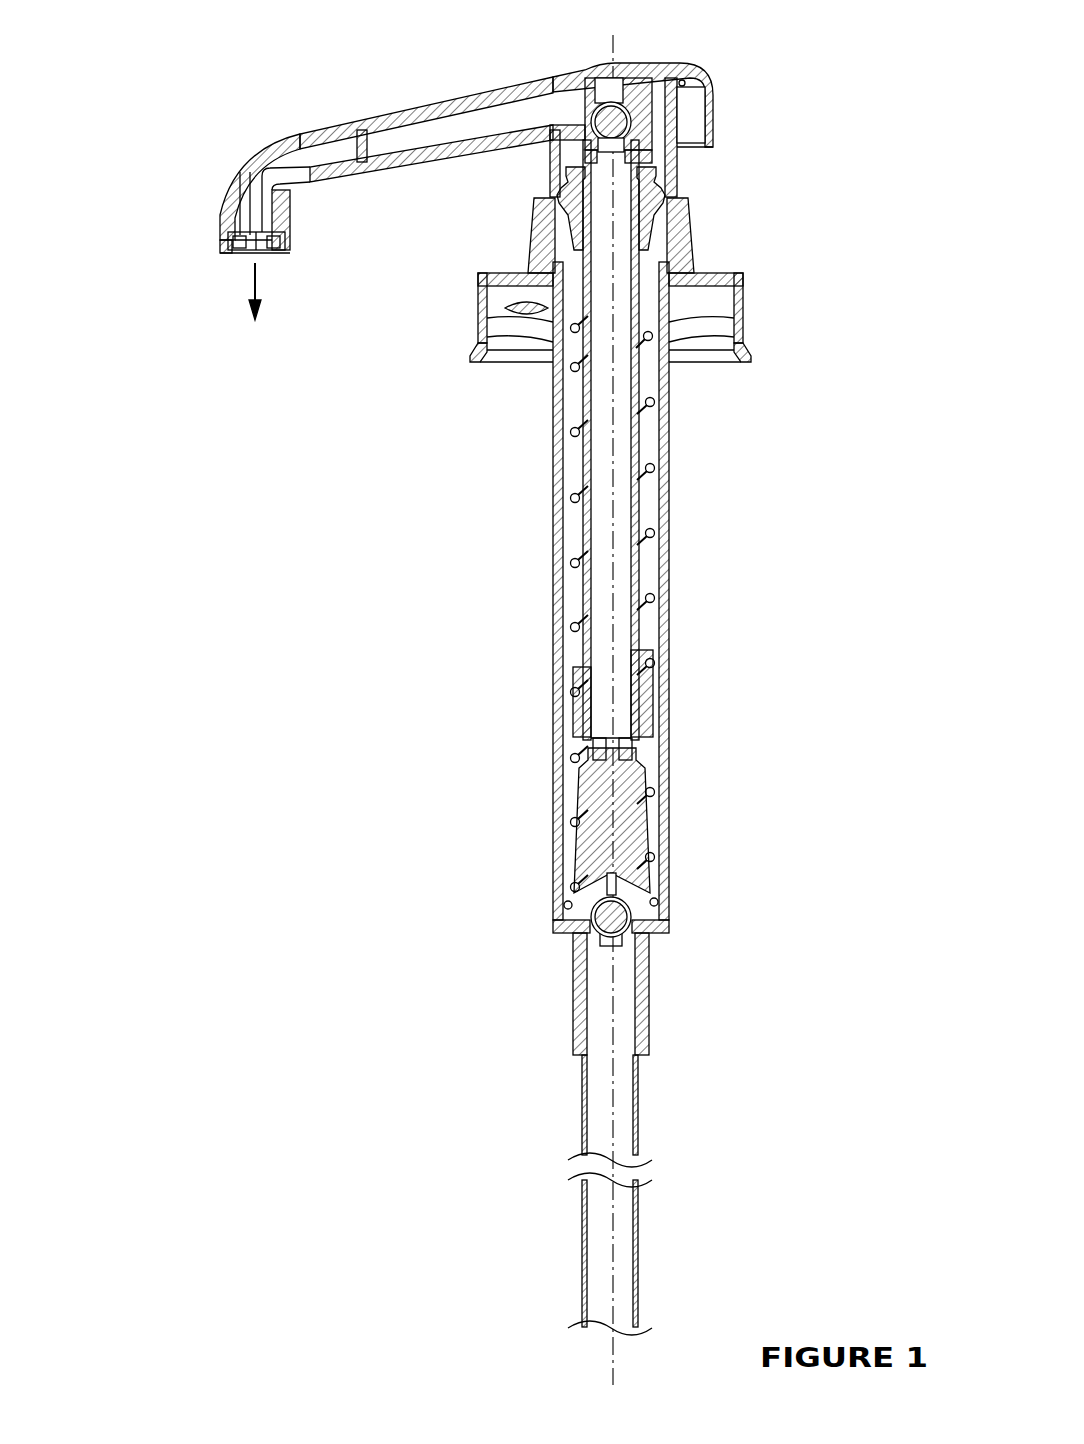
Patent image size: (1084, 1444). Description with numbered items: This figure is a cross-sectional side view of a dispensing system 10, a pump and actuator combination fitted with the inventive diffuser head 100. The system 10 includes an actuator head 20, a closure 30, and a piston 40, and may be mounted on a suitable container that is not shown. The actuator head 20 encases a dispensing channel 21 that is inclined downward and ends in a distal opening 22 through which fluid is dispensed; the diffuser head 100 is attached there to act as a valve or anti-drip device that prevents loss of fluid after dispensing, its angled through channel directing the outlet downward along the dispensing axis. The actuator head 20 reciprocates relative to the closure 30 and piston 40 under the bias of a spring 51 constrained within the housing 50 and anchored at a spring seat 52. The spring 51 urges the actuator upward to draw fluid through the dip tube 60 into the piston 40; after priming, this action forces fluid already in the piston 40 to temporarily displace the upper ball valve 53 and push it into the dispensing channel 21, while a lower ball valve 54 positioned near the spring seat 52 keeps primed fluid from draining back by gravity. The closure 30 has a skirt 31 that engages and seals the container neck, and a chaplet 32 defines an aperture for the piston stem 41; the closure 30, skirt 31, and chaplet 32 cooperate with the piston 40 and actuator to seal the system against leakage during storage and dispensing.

The dispensing system 10 is at (158, 72).
The actuator head 20 is at (610, 76).
The dispensing channel 21 is at (415, 135).
The distal opening 22 is at (290, 133).
The diffuser head 100 is at (295, 250).
The closure 30 is at (478, 325).
The skirt 31 is at (745, 326).
The chaplet 32 is at (540, 228).
The piston 40 is at (652, 338).
The piston stem 41 is at (668, 245).
The housing 50 is at (663, 440).
The spring 51 is at (655, 532).
The spring seat 52 is at (632, 836).
The upper ball valve 53 is at (620, 130).
The lower ball valve 54 is at (632, 924).
The dip tube 60 is at (626, 1100).